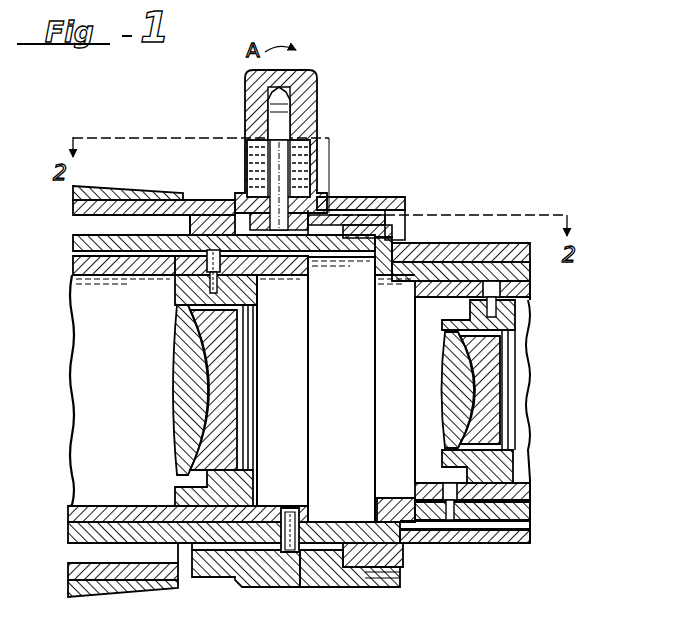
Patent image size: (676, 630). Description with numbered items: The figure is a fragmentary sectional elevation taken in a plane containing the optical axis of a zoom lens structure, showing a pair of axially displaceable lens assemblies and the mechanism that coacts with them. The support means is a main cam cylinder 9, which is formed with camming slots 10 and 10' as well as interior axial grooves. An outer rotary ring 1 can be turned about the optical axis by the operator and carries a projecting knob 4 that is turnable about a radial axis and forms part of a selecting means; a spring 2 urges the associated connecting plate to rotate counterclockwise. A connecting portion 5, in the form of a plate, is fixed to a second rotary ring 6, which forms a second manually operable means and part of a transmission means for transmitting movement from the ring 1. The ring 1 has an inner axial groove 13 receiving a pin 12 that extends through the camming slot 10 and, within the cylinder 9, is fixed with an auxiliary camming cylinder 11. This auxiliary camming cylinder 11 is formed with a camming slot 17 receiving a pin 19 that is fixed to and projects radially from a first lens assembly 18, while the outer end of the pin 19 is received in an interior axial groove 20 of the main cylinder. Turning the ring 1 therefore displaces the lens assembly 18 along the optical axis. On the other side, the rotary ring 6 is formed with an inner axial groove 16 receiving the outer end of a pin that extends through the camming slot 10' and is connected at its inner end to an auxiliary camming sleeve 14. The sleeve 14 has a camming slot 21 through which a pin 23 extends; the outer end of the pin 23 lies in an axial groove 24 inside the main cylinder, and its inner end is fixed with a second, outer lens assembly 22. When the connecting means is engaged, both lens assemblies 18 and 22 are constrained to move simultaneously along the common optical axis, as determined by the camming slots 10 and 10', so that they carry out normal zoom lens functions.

The outer rotary ring 1 is at (370, 200).
The spring 2 is at (310, 157).
The knob 4 is at (318, 88).
The connecting portion 5 is at (382, 214).
The second rotary ring 6 is at (420, 252).
The main cam cylinder 9 is at (325, 527).
The camming slot 10 is at (350, 586).
The camming slot 10' is at (471, 530).
The auxiliary camming cylinder 11 is at (122, 508).
The pin 12 is at (283, 520).
The inner axial groove 13 is at (258, 555).
The auxiliary camming sleeve 14 is at (528, 513).
The inner axial groove 16 is at (513, 540).
The camming slot 17 is at (270, 280).
The first lens assembly 18 is at (173, 300).
The pin 19 is at (168, 278).
The interior axial groove 20 is at (90, 280).
The camming slot 21 is at (530, 291).
The second lens assembly 22 is at (510, 320).
The pin 23 is at (507, 256).
The axial groove 24 is at (452, 285).